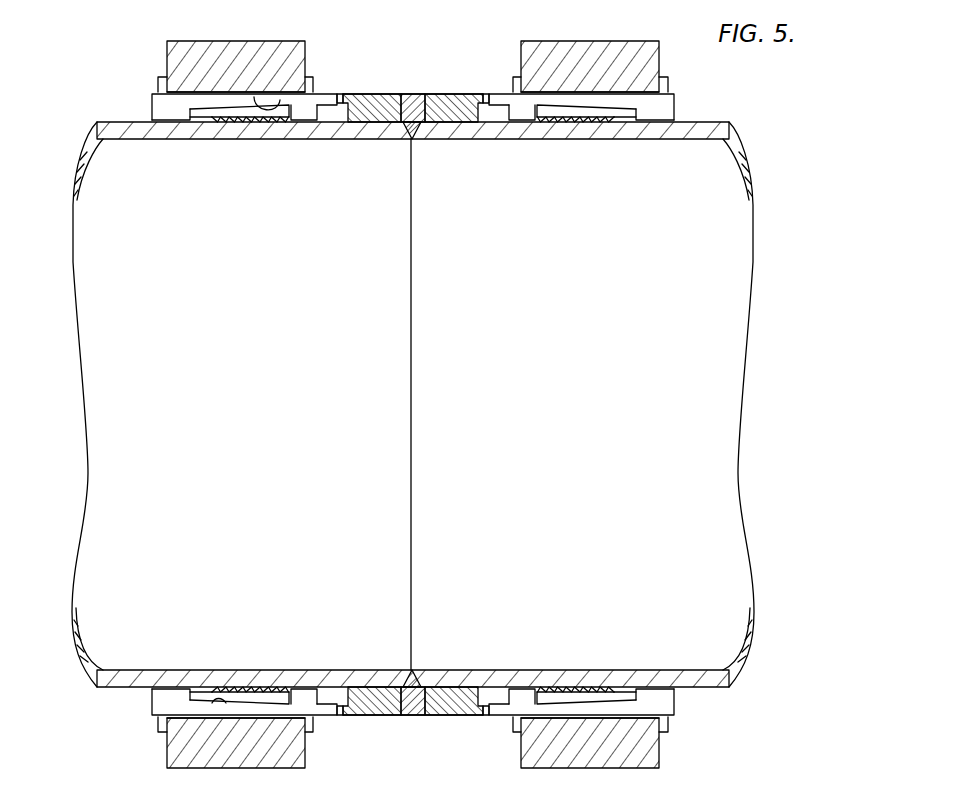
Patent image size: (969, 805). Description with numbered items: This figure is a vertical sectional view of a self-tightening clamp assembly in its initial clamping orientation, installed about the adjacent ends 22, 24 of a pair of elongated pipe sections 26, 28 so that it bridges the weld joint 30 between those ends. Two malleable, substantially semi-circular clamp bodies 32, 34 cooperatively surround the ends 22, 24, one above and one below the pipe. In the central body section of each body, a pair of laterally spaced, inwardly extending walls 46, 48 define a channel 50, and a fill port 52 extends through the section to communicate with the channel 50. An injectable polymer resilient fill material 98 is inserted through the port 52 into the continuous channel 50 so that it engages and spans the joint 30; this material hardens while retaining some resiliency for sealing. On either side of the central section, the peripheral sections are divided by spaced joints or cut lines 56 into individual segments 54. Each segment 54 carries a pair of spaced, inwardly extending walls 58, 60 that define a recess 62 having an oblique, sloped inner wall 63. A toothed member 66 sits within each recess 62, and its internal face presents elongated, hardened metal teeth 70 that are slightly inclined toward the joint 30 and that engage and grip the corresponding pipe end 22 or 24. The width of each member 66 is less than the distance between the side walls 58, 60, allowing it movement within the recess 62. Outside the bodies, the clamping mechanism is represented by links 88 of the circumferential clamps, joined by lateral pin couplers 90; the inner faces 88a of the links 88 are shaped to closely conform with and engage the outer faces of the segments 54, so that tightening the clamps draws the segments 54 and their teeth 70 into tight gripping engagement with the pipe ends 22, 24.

The pipe section end 22 is at (355, 432).
The pipe section end 24 is at (450, 432).
The elongated pipe section 26 is at (92, 479).
The elongated pipe section 28 is at (738, 345).
The weld joint 30 is at (413, 366).
The clamp body 32 is at (688, 101).
The clamp body 34 is at (688, 713).
The inwardly extending wall 46 is at (354, 121).
The inwardly extending wall 48 is at (472, 118).
The channel 50 is at (420, 110).
The fill port 52 is at (412, 93).
The segment 54 is at (152, 100).
The joint or cut line 56 is at (324, 93).
The inwardly extending wall 58 is at (167, 115).
The inwardly extending wall 60 is at (304, 115).
The recess 62 is at (199, 113).
The oblique sloped inner wall 63 is at (254, 97).
The toothed member 66 is at (241, 121).
The teeth 70 is at (280, 121).
The link 88 is at (186, 52).
The inner face of link 88a is at (245, 84).
The lateral pin coupler 90 is at (158, 84).
The resilient fill material 98 is at (406, 131).